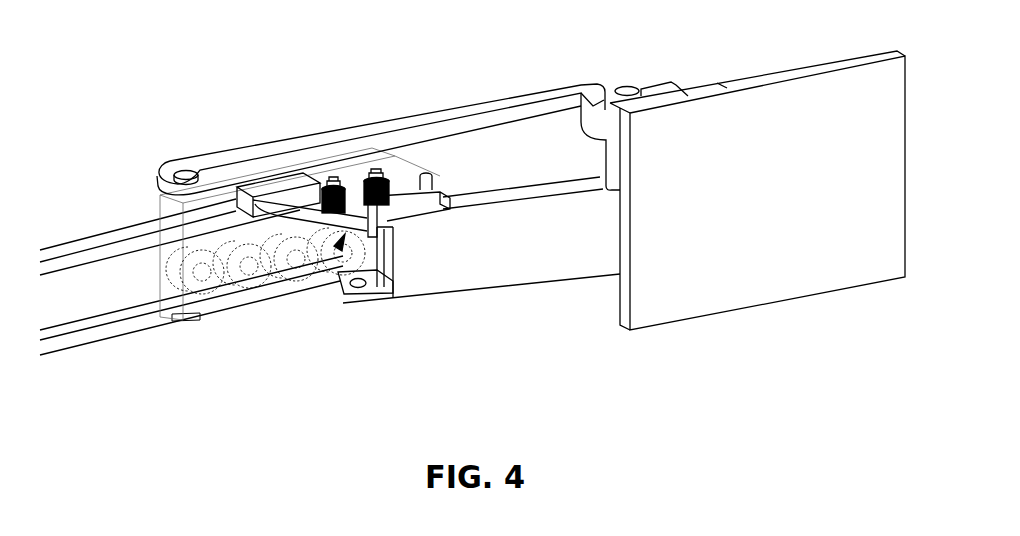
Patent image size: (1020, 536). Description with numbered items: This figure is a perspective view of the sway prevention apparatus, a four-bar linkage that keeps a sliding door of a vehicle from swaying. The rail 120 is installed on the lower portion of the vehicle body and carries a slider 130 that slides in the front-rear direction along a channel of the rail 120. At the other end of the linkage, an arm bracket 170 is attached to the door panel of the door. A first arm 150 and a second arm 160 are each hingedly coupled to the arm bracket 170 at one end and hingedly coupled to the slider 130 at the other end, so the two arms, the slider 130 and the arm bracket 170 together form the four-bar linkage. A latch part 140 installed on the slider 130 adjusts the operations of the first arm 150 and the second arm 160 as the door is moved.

The rail 120 is at (101, 305).
The slider 130 is at (167, 212).
The latch part 140 is at (338, 250).
The first arm 150 is at (405, 118).
The second arm 160 is at (505, 270).
The arm bracket 170 is at (773, 275).